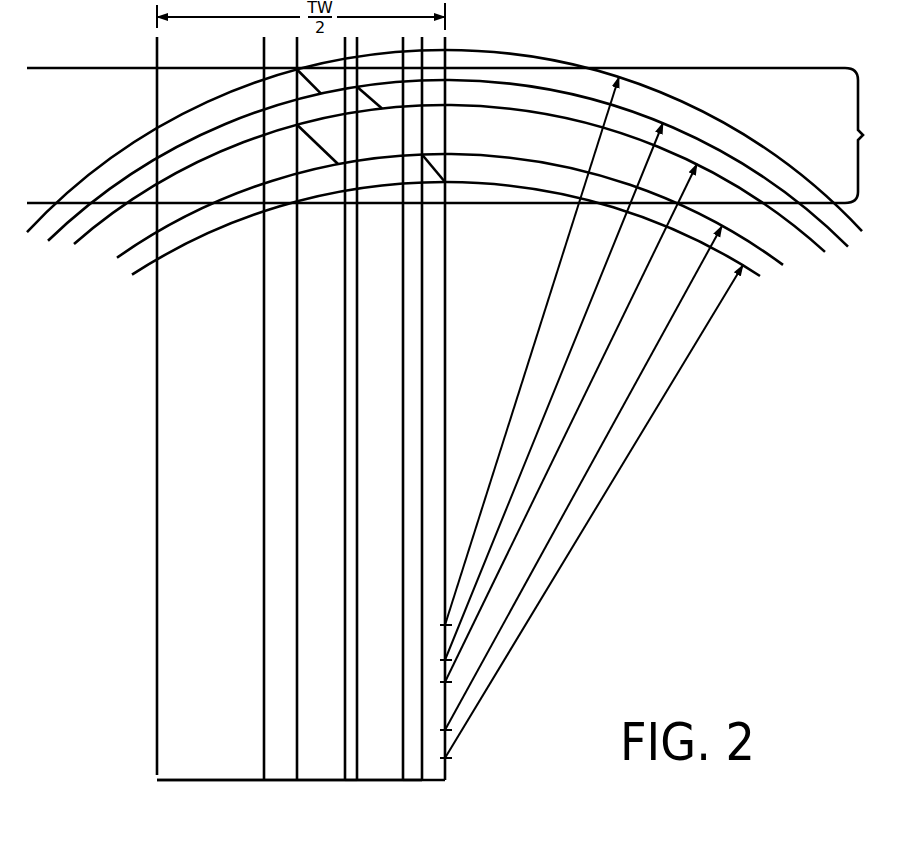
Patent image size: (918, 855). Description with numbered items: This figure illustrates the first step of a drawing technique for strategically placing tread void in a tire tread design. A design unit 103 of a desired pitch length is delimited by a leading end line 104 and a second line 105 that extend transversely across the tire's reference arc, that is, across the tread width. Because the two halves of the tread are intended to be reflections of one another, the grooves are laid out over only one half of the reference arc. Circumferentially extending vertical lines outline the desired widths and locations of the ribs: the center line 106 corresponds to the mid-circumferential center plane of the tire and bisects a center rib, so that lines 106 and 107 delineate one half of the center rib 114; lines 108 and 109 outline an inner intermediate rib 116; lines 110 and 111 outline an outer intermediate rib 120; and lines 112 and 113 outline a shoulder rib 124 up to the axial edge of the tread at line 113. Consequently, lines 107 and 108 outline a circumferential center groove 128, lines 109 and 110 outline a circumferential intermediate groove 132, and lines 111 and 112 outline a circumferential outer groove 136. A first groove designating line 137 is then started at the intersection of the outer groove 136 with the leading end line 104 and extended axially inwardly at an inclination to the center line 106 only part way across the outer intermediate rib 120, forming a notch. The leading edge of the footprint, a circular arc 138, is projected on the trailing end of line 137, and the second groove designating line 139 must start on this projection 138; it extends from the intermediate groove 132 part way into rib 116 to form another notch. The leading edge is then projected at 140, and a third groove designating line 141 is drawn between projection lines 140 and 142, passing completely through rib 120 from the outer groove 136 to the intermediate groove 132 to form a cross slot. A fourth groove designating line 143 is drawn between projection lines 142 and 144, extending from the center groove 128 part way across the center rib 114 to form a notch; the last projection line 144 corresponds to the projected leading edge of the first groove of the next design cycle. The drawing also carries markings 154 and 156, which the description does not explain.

The design unit 103 is at (860, 137).
The leading end line 104 is at (728, 68).
The delimiting line 105 is at (818, 205).
The center line 106 is at (445, 327).
The circumferentially extending line 107 is at (423, 257).
The circumferentially extending line 108 is at (403, 273).
The circumferentially extending line 109 is at (358, 385).
The circumferentially extending line 110 is at (345, 358).
The circumferentially extending line 111 is at (297, 303).
The circumferentially extending line 112 is at (264, 362).
The axial edge line 113 is at (157, 455).
The center rib 114 is at (445, 780).
The inner intermediate rib 116 is at (382, 783).
The outer intermediate rib 120 is at (320, 782).
The shoulder rib 124 is at (212, 782).
The circumferential center groove 128 is at (413, 782).
The circumferential intermediate groove 132 is at (352, 780).
The circumferential outer groove 136 is at (282, 784).
The first groove designating line 137 is at (318, 86).
The leading edge projection line 138 is at (140, 170).
The second groove designating line 139 is at (375, 97).
The leading edge projection line 140 is at (96, 224).
The third groove designating line 141 is at (322, 150).
The leading edge projection line 142 is at (137, 250).
The fourth groove designating line 143 is at (440, 163).
The last leading edge projection line 144 is at (193, 240).
The groove width 154 is at (317, 849).
The groove width 156 is at (382, 849).